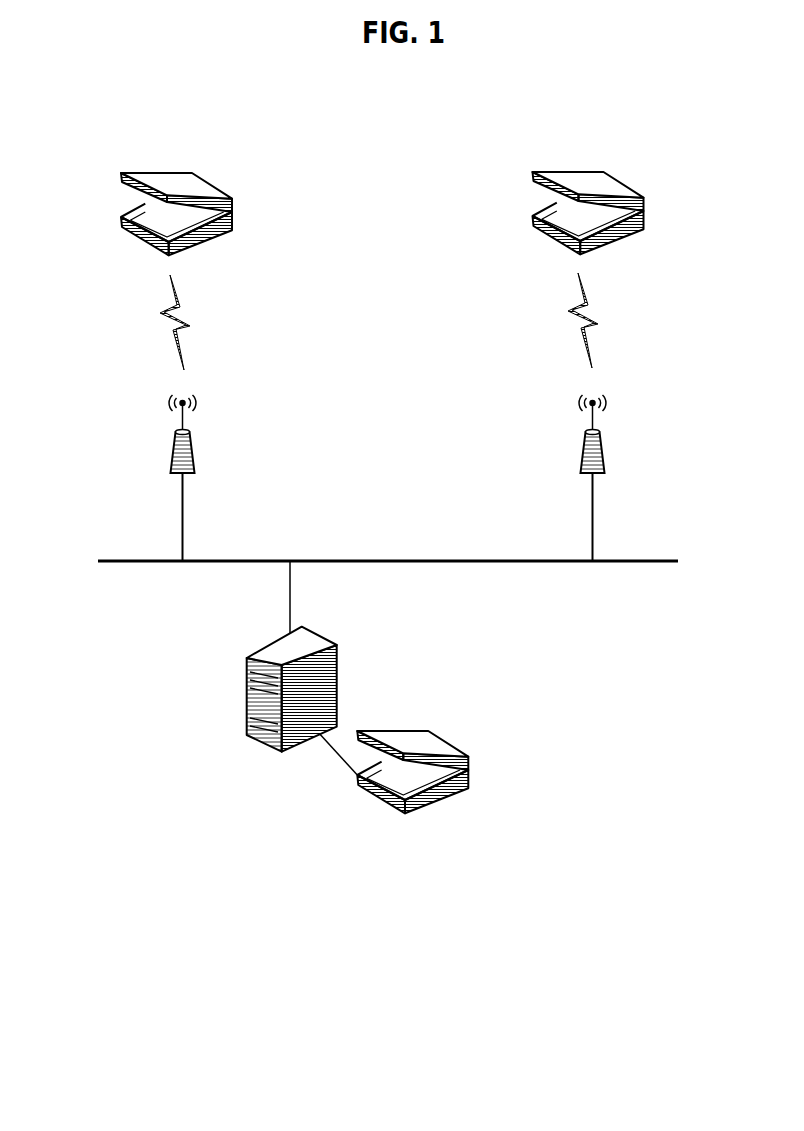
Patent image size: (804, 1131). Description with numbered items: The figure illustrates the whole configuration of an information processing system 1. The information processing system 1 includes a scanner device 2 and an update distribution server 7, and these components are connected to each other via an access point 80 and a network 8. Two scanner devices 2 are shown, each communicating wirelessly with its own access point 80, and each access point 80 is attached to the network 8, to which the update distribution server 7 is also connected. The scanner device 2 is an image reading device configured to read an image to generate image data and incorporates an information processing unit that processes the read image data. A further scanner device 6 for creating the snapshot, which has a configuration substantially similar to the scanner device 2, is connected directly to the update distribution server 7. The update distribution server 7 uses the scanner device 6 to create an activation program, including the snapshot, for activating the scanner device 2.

The information processing system 1 is at (545, 1001).
The scanner device 2 is at (175, 172).
The access point 80 is at (188, 442).
The network 8 is at (512, 562).
The update distribution server 7 is at (247, 697).
The scanner device for creating the snapshot 6 is at (511, 836).